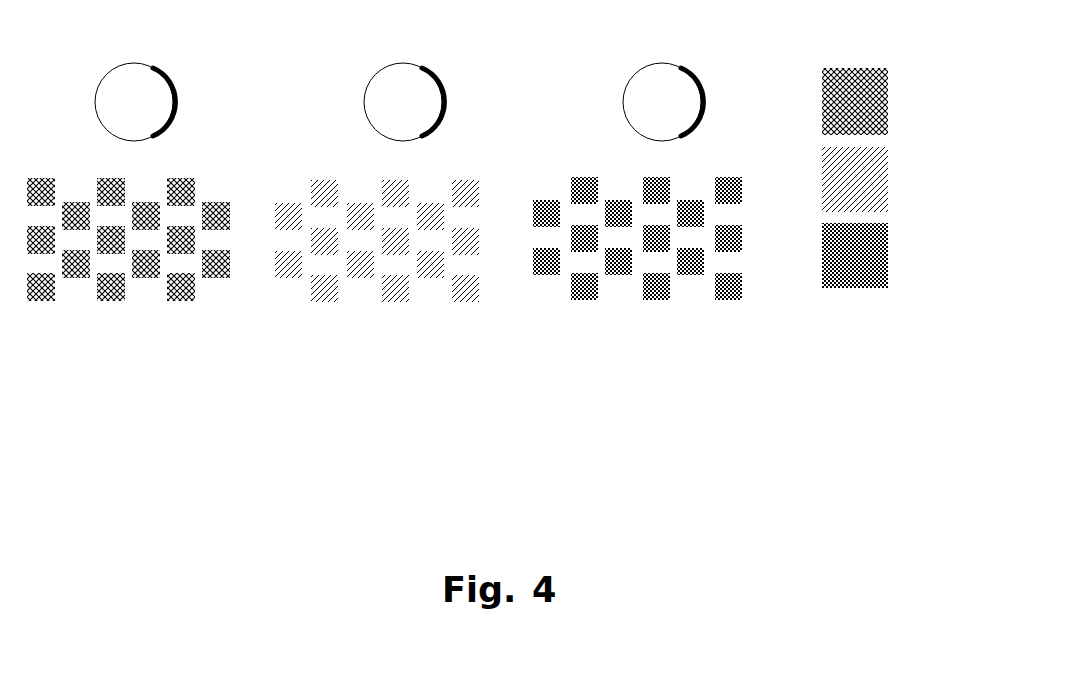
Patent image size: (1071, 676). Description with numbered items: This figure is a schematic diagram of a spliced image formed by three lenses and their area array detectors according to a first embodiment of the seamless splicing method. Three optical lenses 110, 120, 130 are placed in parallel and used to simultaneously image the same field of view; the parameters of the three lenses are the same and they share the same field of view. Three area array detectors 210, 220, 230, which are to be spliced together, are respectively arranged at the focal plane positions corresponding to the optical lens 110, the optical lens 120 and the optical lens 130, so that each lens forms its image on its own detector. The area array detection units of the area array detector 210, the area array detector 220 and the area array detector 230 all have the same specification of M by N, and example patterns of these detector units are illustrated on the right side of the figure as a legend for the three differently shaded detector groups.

The optical lens 110 is at (105, 102).
The optical lens 120 is at (367, 102).
The optical lens 130 is at (625, 102).
The area array detector 210 is at (488, 209).
The area array detector 220 is at (612, 249).
The area array detector 230 is at (741, 262).